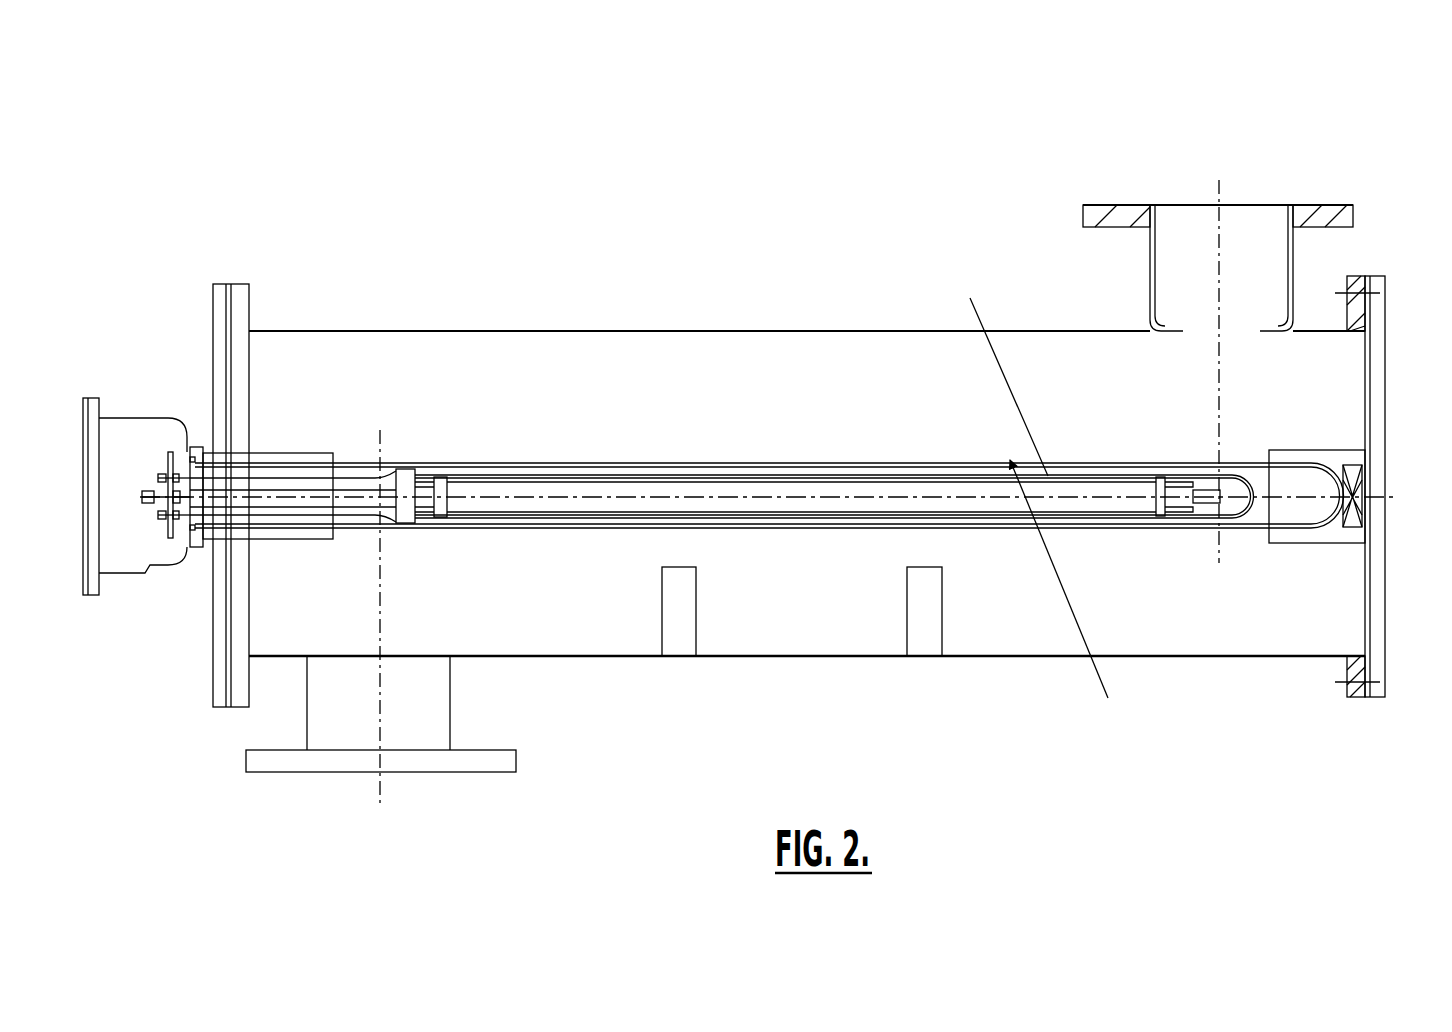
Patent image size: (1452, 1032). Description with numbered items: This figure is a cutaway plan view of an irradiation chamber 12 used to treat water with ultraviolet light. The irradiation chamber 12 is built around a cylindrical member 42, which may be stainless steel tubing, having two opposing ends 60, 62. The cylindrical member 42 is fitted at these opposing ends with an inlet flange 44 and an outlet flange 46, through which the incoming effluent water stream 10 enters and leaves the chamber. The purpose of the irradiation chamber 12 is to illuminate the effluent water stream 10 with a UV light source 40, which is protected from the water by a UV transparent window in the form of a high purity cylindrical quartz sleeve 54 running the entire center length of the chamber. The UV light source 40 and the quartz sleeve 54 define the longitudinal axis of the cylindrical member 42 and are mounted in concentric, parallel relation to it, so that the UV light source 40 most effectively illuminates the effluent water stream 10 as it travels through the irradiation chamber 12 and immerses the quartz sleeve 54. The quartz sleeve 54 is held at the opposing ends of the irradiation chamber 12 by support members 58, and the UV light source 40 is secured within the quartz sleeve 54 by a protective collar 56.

The effluent water stream 10 is at (380, 822).
The irradiation chamber 12 is at (790, 188).
The UV light source 40 is at (815, 476).
The cylindrical member 42 is at (813, 657).
The inlet flange 44 is at (450, 723).
The outlet flange 46 is at (1290, 258).
The quartz sleeve 54 is at (661, 463).
The protective collar 56 is at (403, 480).
The support members 58 is at (300, 447).
The opposing end 60 is at (1385, 597).
The opposing end 62 is at (204, 340).